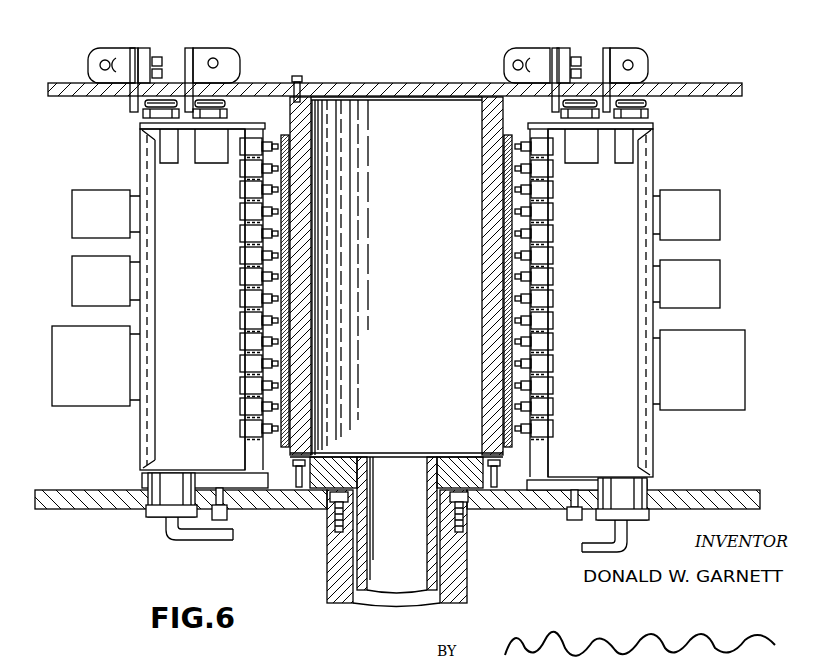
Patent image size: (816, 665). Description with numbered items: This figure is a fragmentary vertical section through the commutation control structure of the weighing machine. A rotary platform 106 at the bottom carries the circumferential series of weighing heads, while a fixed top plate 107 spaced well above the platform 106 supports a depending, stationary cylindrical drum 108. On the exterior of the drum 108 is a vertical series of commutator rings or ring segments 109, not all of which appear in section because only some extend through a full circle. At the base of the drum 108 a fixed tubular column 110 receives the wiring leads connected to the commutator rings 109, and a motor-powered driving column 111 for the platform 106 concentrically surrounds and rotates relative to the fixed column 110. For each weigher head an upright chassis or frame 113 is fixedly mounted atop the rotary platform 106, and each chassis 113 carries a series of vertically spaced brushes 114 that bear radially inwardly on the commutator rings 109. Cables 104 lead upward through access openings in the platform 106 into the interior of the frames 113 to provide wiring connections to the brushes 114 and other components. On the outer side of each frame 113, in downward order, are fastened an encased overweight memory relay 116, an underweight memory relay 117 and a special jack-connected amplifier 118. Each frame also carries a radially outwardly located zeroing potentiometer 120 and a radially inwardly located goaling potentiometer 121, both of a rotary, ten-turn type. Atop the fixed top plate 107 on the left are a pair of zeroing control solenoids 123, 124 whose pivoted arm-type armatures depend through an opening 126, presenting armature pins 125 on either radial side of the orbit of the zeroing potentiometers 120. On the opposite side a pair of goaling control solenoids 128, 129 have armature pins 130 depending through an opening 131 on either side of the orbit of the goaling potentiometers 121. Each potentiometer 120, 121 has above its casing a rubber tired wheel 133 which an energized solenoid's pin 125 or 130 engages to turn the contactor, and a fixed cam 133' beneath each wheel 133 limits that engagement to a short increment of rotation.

The cable 104 is at (200, 540).
The rotary platform 106 is at (97, 500).
The fixed top plate 107 is at (703, 82).
The cylindrical drum 108 is at (308, 322).
The commutator rings 109 is at (290, 233).
The fixed tubular column 110 is at (360, 545).
The motor-powered driving column 111 is at (452, 577).
The upright chassis 113 is at (140, 440).
The brushes 114 is at (240, 345).
The overweight memory relay 116 is at (92, 210).
The underweight memory relay 117 is at (92, 280).
The jack-connected amplifier 118 is at (52, 372).
The zeroing potentiometer 120 is at (170, 160).
The goaling potentiometer 121 is at (222, 160).
The zeroing control solenoid 123 is at (121, 14).
The zeroing control solenoid 124 is at (212, 55).
The armature pins 125 is at (218, 78).
The opening 126 is at (154, 85).
The goaling control solenoid 128 is at (540, 30).
The goaling control solenoid 129 is at (627, 50).
The armature pins 130 is at (612, 75).
The opening 131 is at (578, 52).
The rubber tired wheel 133 is at (426, 69).
The fixed cam 133' is at (368, 324).